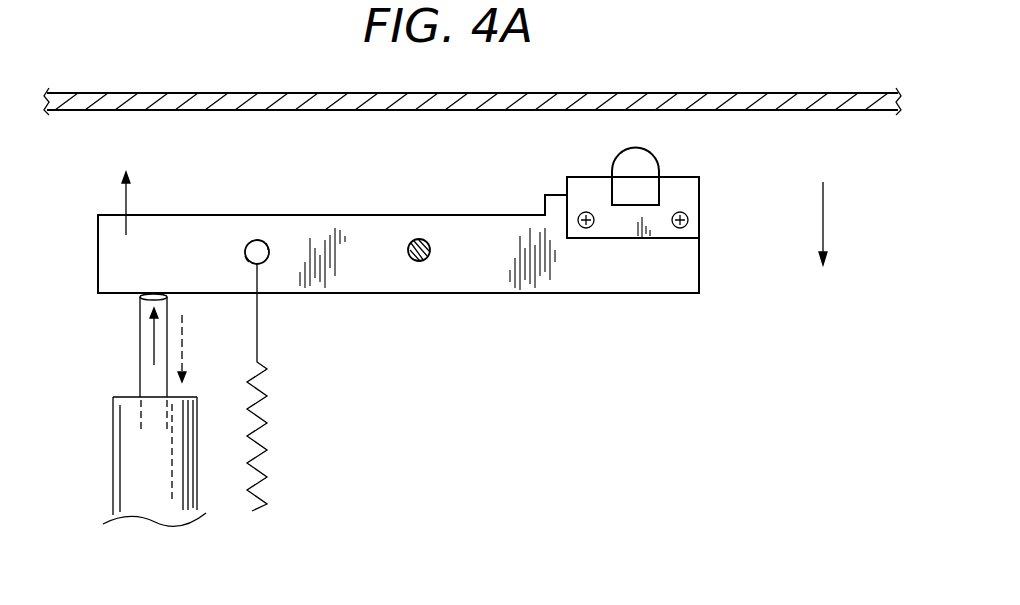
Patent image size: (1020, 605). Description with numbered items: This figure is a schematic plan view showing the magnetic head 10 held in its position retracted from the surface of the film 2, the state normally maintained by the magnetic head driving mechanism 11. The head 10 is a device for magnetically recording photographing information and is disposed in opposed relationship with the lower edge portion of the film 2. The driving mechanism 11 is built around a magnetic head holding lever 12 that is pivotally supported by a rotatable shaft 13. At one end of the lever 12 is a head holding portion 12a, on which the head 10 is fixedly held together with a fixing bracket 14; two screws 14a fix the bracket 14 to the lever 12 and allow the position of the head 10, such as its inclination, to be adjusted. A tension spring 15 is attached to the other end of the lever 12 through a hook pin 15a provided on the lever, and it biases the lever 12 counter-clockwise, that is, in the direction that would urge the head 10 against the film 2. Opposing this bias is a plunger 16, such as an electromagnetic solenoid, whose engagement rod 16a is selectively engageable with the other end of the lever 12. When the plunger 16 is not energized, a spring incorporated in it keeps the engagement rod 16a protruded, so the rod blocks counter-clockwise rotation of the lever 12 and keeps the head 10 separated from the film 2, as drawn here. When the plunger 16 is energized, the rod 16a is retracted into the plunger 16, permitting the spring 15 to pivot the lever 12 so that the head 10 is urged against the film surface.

The film 2 is at (777, 93).
The magnetic head 10 is at (650, 165).
The magnetic head driving mechanism 11 is at (551, 317).
The magnetic head holding lever 12 is at (460, 284).
The head holding portion 12a is at (700, 274).
The rotatable shaft 13 is at (419, 239).
The fixing bracket 14 is at (700, 191).
The screws 14a is at (586, 212).
The tension spring 15 is at (262, 425).
The hook pin 15a is at (257, 240).
The plunger 16 is at (197, 476).
The engagement rod 16a is at (139, 337).